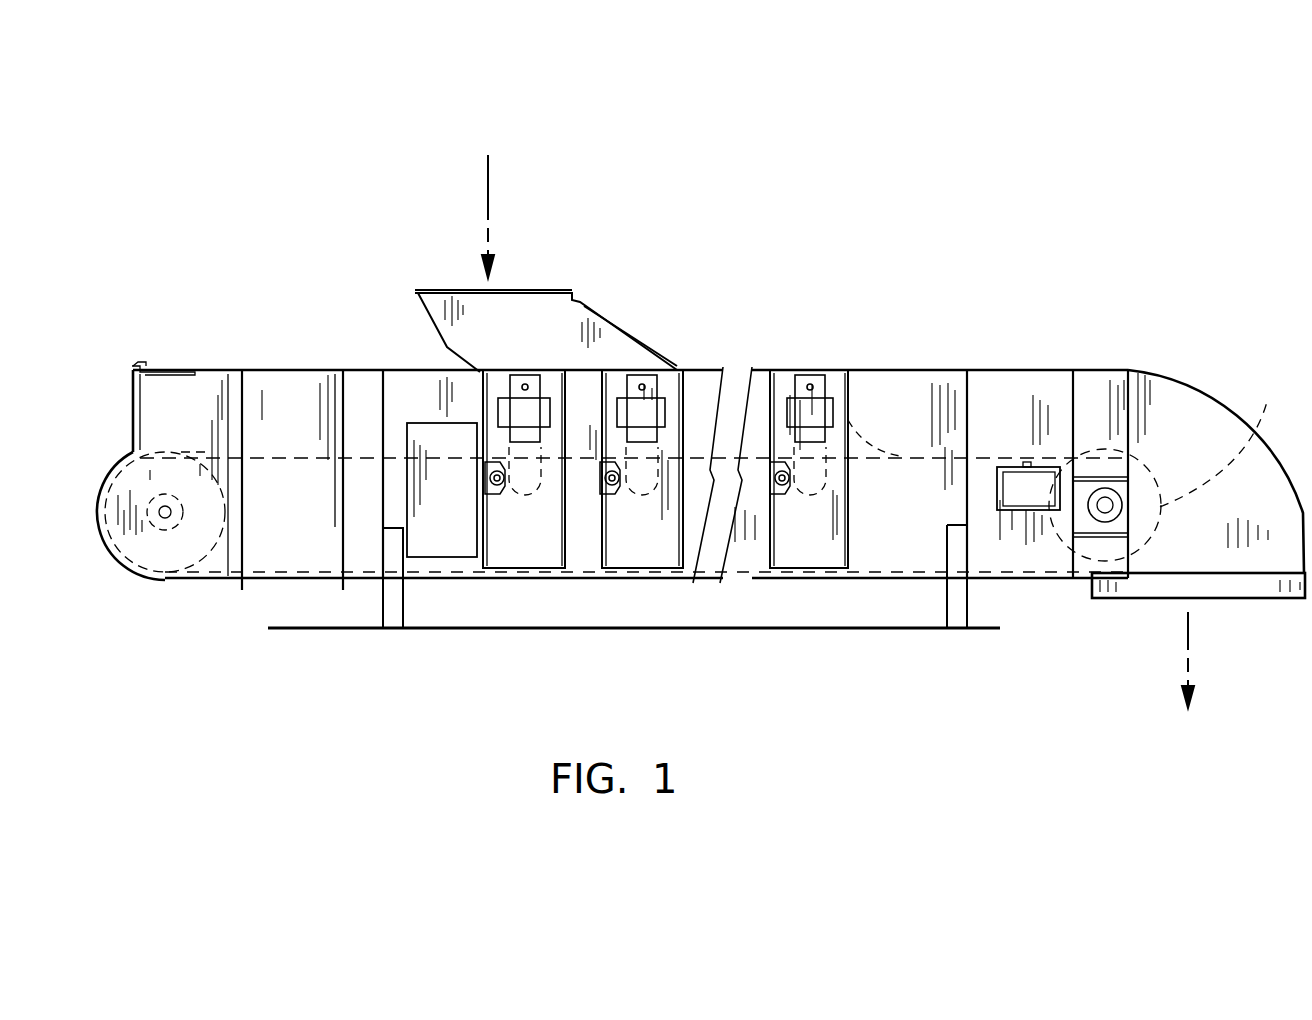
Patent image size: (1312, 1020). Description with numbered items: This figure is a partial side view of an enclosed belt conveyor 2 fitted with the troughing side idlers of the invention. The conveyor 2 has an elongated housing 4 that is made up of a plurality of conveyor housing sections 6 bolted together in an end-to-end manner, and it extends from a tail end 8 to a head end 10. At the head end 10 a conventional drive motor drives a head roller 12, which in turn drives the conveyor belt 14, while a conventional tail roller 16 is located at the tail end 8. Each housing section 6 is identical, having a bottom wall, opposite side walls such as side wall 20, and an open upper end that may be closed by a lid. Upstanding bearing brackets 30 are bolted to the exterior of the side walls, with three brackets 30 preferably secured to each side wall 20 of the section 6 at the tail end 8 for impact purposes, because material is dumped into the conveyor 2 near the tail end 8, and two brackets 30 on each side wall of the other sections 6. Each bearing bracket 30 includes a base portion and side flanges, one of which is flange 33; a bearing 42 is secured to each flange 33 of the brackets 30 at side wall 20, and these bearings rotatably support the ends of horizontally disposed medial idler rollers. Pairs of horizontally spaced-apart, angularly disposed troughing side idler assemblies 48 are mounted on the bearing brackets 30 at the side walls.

The enclosed belt conveyor 2 is at (808, 312).
The elongated housing 4 is at (304, 362).
The housing section 6 is at (645, 555).
The tail end 8 is at (110, 412).
The head end 10 is at (1246, 368).
The head roller 12 is at (1222, 433).
The conveyor belt 14 is at (292, 455).
The tail roller 16 is at (137, 582).
The side wall 20 is at (425, 410).
The bearing bracket 30 is at (560, 354).
The side flange 33 is at (488, 525).
The bearing 42 is at (500, 495).
The troughing side idler assembly 48 is at (496, 366).